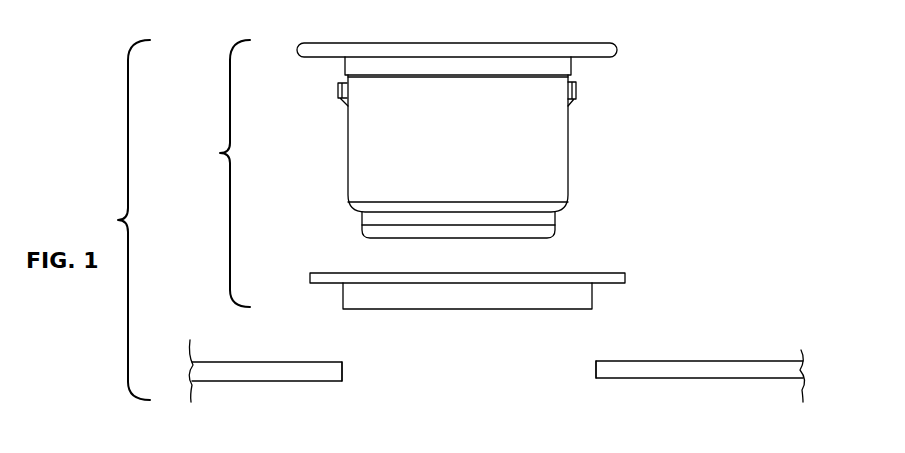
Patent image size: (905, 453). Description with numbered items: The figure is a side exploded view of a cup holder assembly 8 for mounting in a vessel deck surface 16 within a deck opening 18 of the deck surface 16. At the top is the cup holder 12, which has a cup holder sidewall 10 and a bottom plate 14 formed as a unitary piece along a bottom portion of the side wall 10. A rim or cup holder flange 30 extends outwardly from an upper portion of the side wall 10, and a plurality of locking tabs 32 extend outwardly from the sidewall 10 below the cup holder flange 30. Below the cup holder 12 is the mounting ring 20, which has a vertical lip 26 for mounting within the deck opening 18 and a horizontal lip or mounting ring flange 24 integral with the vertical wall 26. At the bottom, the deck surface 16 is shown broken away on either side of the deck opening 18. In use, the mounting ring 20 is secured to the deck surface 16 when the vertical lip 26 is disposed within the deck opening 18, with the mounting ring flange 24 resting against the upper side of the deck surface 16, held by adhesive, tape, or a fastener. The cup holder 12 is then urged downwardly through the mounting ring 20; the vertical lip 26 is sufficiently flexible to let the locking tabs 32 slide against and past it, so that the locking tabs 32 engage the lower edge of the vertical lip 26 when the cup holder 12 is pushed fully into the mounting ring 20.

The cup holder assembly 8 is at (219, 173).
The cup holder sidewall 10 is at (348, 152).
The cup holder 12 is at (672, 79).
The bottom plate 14 is at (380, 238).
The deck surface 16 is at (292, 375).
The deck opening 18 is at (345, 371).
The mounting ring 20 is at (638, 292).
The mounting ring flange 24 is at (320, 273).
The vertical lip 26 is at (345, 296).
The cup holder flange 30 is at (610, 46).
The locking tabs 32 is at (336, 88).